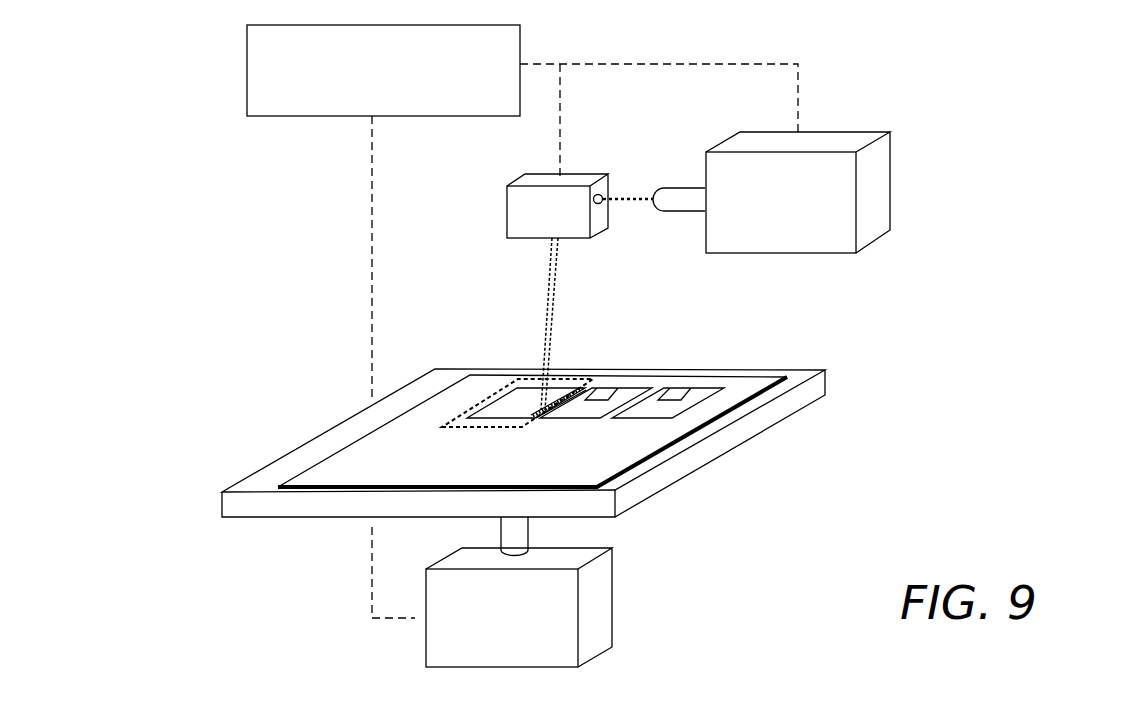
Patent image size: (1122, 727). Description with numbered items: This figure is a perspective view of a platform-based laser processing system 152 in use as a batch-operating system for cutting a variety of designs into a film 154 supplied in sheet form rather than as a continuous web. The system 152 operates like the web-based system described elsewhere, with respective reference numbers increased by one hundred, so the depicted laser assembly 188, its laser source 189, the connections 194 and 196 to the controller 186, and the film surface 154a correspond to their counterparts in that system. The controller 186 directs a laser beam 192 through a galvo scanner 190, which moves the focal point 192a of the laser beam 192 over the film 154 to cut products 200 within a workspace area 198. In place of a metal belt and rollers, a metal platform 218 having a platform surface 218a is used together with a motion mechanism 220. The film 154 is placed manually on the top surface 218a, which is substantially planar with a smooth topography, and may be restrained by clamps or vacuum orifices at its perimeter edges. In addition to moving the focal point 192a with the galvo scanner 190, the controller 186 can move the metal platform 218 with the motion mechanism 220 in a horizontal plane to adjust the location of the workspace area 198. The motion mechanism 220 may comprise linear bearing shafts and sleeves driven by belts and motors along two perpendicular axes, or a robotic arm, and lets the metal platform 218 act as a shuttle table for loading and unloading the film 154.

The laser processing system 152 is at (150, 348).
The film 154 is at (683, 441).
The substrate surface 154a is at (350, 465).
The controller 186 is at (415, 116).
The laser assembly 188 is at (950, 153).
The laser source 189 is at (878, 175).
The galvo scanner 190 is at (580, 177).
The laser beam 192 is at (618, 203).
The focal point 192a is at (533, 406).
The controller-stage connection 194 is at (372, 178).
The controller-laser connection 196 is at (688, 64).
The workspace area 198 is at (468, 428).
The products 200 is at (664, 392).
The metal platform 218 is at (774, 412).
The platform surface 218a is at (798, 372).
The motion mechanism 220 is at (602, 610).